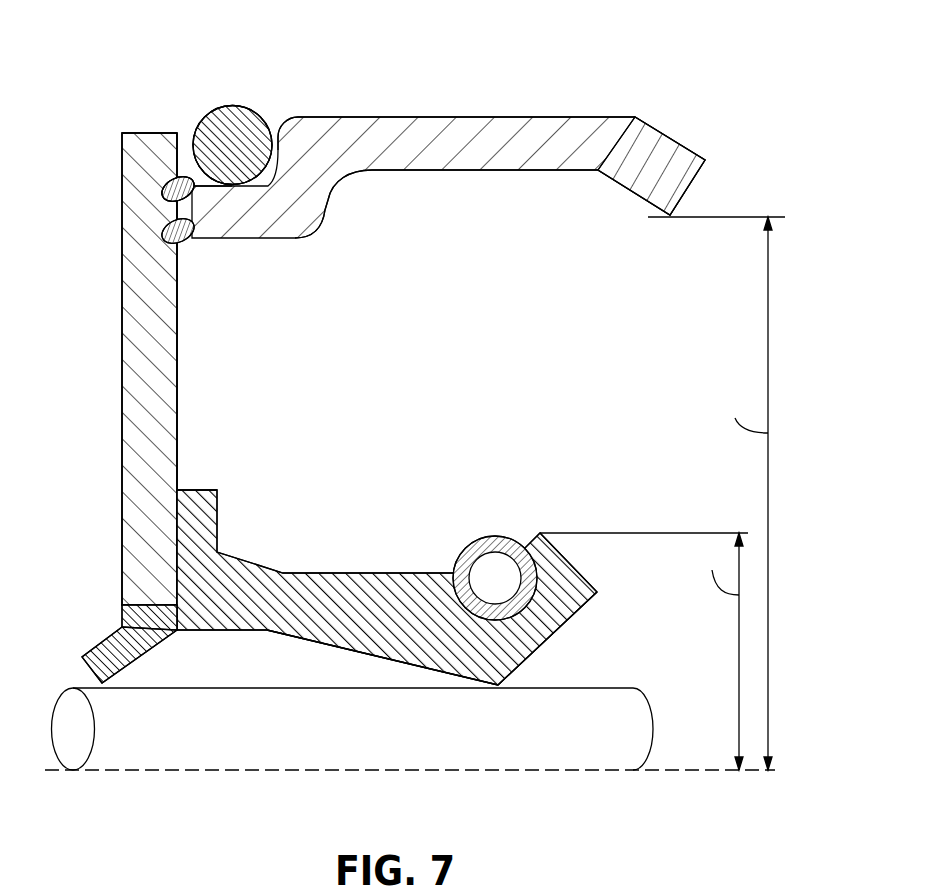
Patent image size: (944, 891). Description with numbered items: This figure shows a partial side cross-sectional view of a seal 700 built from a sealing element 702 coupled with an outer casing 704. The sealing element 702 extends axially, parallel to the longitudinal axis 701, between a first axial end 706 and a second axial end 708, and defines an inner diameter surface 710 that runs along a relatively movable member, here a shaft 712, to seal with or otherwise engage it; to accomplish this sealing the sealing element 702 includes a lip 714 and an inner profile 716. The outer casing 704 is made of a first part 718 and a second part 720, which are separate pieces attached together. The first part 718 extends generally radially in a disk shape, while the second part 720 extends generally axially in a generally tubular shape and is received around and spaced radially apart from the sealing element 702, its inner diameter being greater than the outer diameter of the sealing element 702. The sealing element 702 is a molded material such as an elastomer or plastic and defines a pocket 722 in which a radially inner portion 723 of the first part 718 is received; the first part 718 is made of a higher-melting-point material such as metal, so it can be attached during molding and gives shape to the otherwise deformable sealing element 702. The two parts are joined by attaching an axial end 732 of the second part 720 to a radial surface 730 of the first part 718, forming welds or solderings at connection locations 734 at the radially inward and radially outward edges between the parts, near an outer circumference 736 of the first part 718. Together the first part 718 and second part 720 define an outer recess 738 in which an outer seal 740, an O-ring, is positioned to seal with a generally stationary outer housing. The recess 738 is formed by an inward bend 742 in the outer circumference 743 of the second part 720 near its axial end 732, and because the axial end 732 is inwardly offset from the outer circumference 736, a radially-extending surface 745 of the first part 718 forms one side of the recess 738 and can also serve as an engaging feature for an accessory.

The seal 700 is at (601, 52).
The longitudinal axis 701 is at (675, 768).
The sealing element 702 is at (365, 588).
The outer casing 704 is at (415, 117).
The first axial end 706 is at (122, 617).
The second axial end 708 is at (597, 592).
The inner diameter surface 710 is at (318, 642).
The shaft 712 is at (633, 712).
The lip 714 is at (140, 657).
The inner profile 716 is at (500, 673).
The first part 718 is at (160, 367).
The second part 720 is at (433, 160).
The pocket 722 is at (150, 538).
The radially inner portion 723 is at (140, 567).
The radial surface 730 is at (177, 400).
The axial end 732 is at (170, 207).
The connection location 734 is at (200, 196).
The outer circumference 736 is at (135, 132).
The outer recess 738 is at (187, 103).
The outer seal 740 is at (238, 122).
The inward bend 742 is at (295, 130).
The outer circumference 743 is at (357, 117).
The radially-extending surface 745 is at (188, 142).